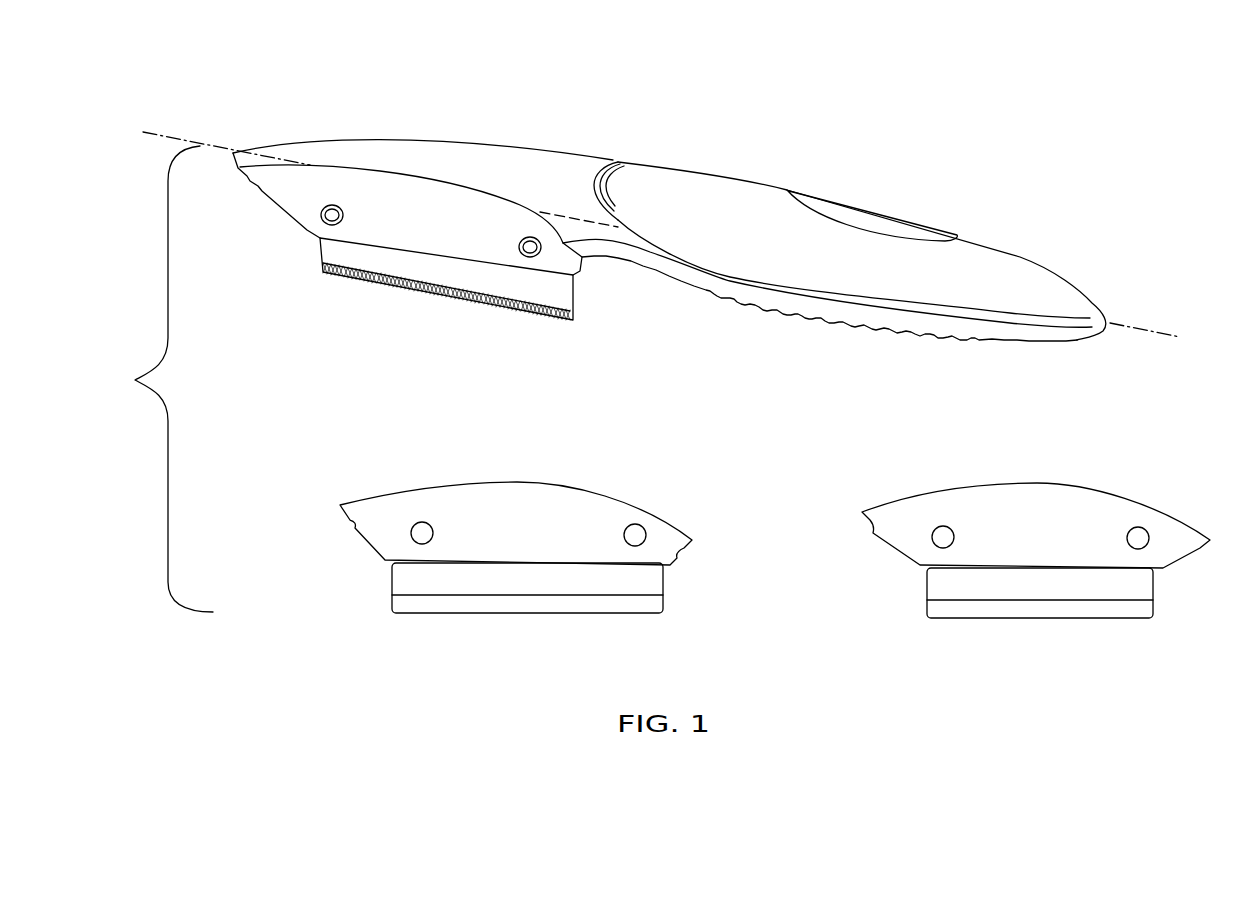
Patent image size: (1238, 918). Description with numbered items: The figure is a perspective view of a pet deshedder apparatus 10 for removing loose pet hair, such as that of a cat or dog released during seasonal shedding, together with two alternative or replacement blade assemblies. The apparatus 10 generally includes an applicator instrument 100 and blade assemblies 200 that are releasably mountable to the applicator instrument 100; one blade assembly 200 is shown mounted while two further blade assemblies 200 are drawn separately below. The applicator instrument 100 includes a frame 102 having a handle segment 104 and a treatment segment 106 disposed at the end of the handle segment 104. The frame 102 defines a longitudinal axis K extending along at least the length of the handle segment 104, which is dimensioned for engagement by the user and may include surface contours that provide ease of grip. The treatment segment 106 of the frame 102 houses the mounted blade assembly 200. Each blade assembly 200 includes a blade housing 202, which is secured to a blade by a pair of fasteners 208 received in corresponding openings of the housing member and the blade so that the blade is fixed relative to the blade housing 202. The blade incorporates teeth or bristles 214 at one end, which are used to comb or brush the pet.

The pet deshedder apparatus 10 is at (135, 380).
The applicator instrument 100 is at (682, 339).
The frame 102 is at (638, 138).
The handle segment 104 is at (1000, 248).
The treatment segment 106 is at (385, 157).
The longitudinal axis K is at (563, 217).
The blade assembly 200 is at (398, 475).
The blade housing 202 is at (503, 565).
The fasteners 208 is at (422, 533).
The teeth or bristles 214 is at (527, 313).